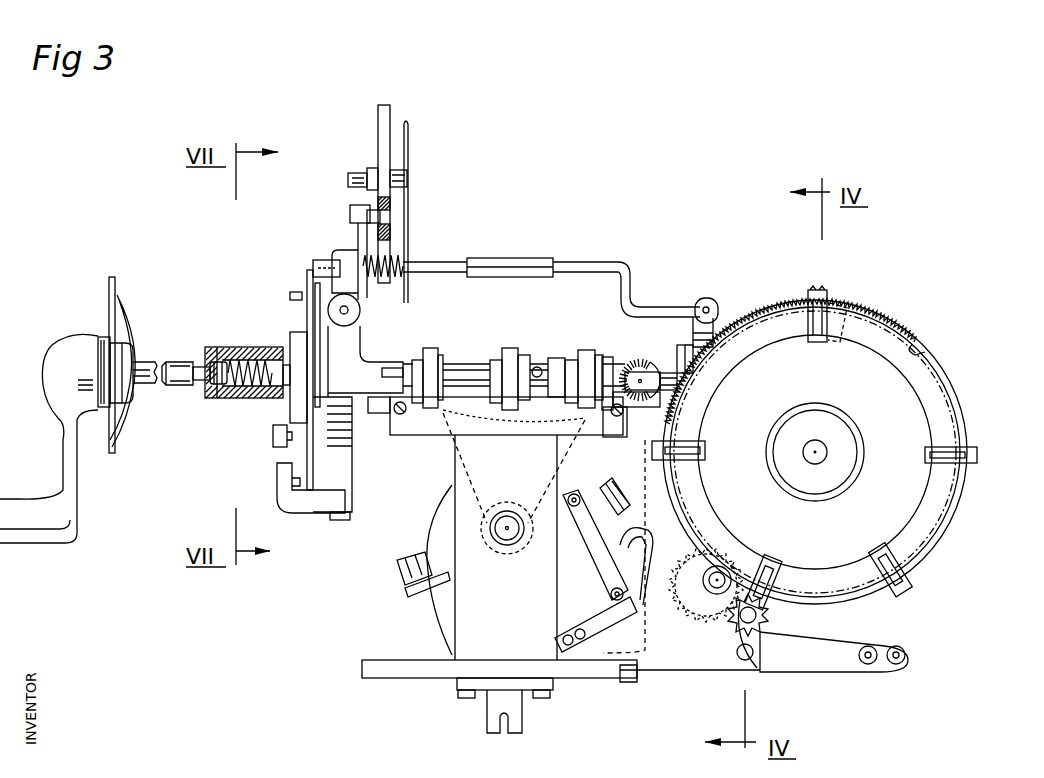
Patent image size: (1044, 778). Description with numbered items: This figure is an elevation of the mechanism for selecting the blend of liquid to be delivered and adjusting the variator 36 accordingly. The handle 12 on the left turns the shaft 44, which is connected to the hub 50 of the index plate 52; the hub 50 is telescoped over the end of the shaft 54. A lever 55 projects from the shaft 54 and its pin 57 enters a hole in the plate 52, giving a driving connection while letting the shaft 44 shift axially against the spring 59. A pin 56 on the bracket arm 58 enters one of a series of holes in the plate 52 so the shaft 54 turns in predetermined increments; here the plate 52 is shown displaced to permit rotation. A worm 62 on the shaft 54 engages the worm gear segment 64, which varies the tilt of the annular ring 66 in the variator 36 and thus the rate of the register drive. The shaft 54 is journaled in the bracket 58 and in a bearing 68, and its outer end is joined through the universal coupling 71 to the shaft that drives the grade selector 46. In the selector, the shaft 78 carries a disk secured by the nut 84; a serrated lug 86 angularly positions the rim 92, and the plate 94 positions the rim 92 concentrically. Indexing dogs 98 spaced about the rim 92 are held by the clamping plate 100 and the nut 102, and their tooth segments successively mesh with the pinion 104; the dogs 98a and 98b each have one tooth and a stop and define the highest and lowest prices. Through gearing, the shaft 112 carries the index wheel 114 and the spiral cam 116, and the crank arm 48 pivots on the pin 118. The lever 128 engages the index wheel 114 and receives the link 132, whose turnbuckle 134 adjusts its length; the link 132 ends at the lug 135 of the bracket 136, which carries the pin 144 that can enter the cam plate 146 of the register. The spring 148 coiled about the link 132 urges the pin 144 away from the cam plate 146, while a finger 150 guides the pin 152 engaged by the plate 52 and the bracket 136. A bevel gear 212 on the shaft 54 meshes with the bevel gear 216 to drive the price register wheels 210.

The crank handle 12 is at (55, 452).
The variator 36 is at (346, 635).
The shaft 44 is at (190, 362).
The grade selector 46 is at (405, 122).
The crank arm 48 is at (828, 673).
The hub 50 is at (222, 398).
The index plate 52 is at (307, 462).
The shaft 54 is at (279, 398).
The lever 55 is at (315, 318).
The pin 56 is at (281, 485).
The pin 57 is at (296, 292).
The bracket arm 58 is at (345, 452).
The spring 59 is at (258, 347).
The worm 62 is at (492, 364).
The worm gear segment 64 is at (582, 442).
The annular ring 66 is at (408, 605).
The bearing 68 is at (562, 358).
The universal coupling 71 is at (681, 344).
The shaft 78 is at (812, 441).
The nut 84 is at (856, 440).
The serrated segment 86 is at (888, 308).
The rim 92 is at (928, 352).
The plate 94 is at (935, 390).
The indexing dogs 98 is at (977, 462).
The dog 98a is at (826, 292).
The dog 98b is at (700, 440).
The clamping plate 100 is at (942, 518).
The nut 102 is at (862, 466).
The pinion 104 is at (770, 617).
The shaft 112 is at (717, 566).
The index wheel 114 is at (680, 536).
The spiral cam 116 is at (690, 630).
The pin 118 is at (748, 660).
The lever 128 is at (716, 306).
The link 132 is at (630, 280).
The turnbuckle 134 is at (500, 258).
The lug 135 is at (343, 250).
The bracket 136 is at (352, 205).
The pin 144 is at (390, 222).
The cam plate 146 is at (378, 130).
The spring 148 is at (396, 278).
The finger 150 is at (273, 436).
The pin 152 is at (310, 270).
The register wheels 210 is at (510, 348).
The bevel gear 212 is at (630, 368).
The bevel gear 216 is at (640, 360).